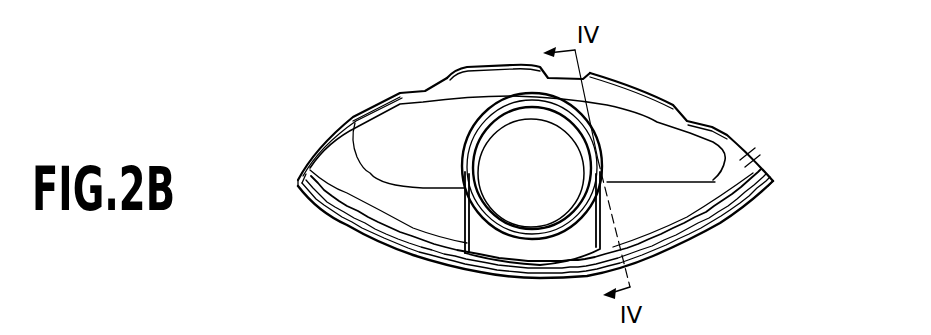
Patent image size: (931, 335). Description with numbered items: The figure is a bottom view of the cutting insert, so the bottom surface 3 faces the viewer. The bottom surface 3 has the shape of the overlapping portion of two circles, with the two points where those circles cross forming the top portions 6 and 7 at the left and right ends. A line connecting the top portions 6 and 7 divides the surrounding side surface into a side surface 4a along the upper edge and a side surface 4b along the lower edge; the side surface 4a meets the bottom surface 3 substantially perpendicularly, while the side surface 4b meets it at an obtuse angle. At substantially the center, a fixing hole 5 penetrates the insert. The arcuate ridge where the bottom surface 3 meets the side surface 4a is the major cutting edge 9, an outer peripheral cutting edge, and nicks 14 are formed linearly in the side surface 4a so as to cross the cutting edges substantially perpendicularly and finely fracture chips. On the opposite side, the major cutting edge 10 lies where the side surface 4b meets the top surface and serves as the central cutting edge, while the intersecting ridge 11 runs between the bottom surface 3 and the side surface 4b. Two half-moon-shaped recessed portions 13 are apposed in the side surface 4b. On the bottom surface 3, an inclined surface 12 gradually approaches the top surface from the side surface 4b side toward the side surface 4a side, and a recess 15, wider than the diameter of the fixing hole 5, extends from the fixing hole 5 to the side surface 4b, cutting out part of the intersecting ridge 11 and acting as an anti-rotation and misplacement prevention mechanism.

The bottom surface 3 is at (437, 258).
The side surface 4a is at (468, 72).
The side surface 4b is at (537, 270).
The fixing hole 5 is at (552, 213).
The top portion 6 is at (771, 180).
The top portion 7 is at (297, 180).
The major cutting edge 9 is at (500, 64).
The major cutting edge 10 is at (640, 268).
The intersecting ridge 11 is at (345, 226).
The inclined surface 12 is at (381, 96).
The recessed portion 13 is at (377, 240).
The nick 14 is at (427, 97).
The recess 15 is at (505, 245).